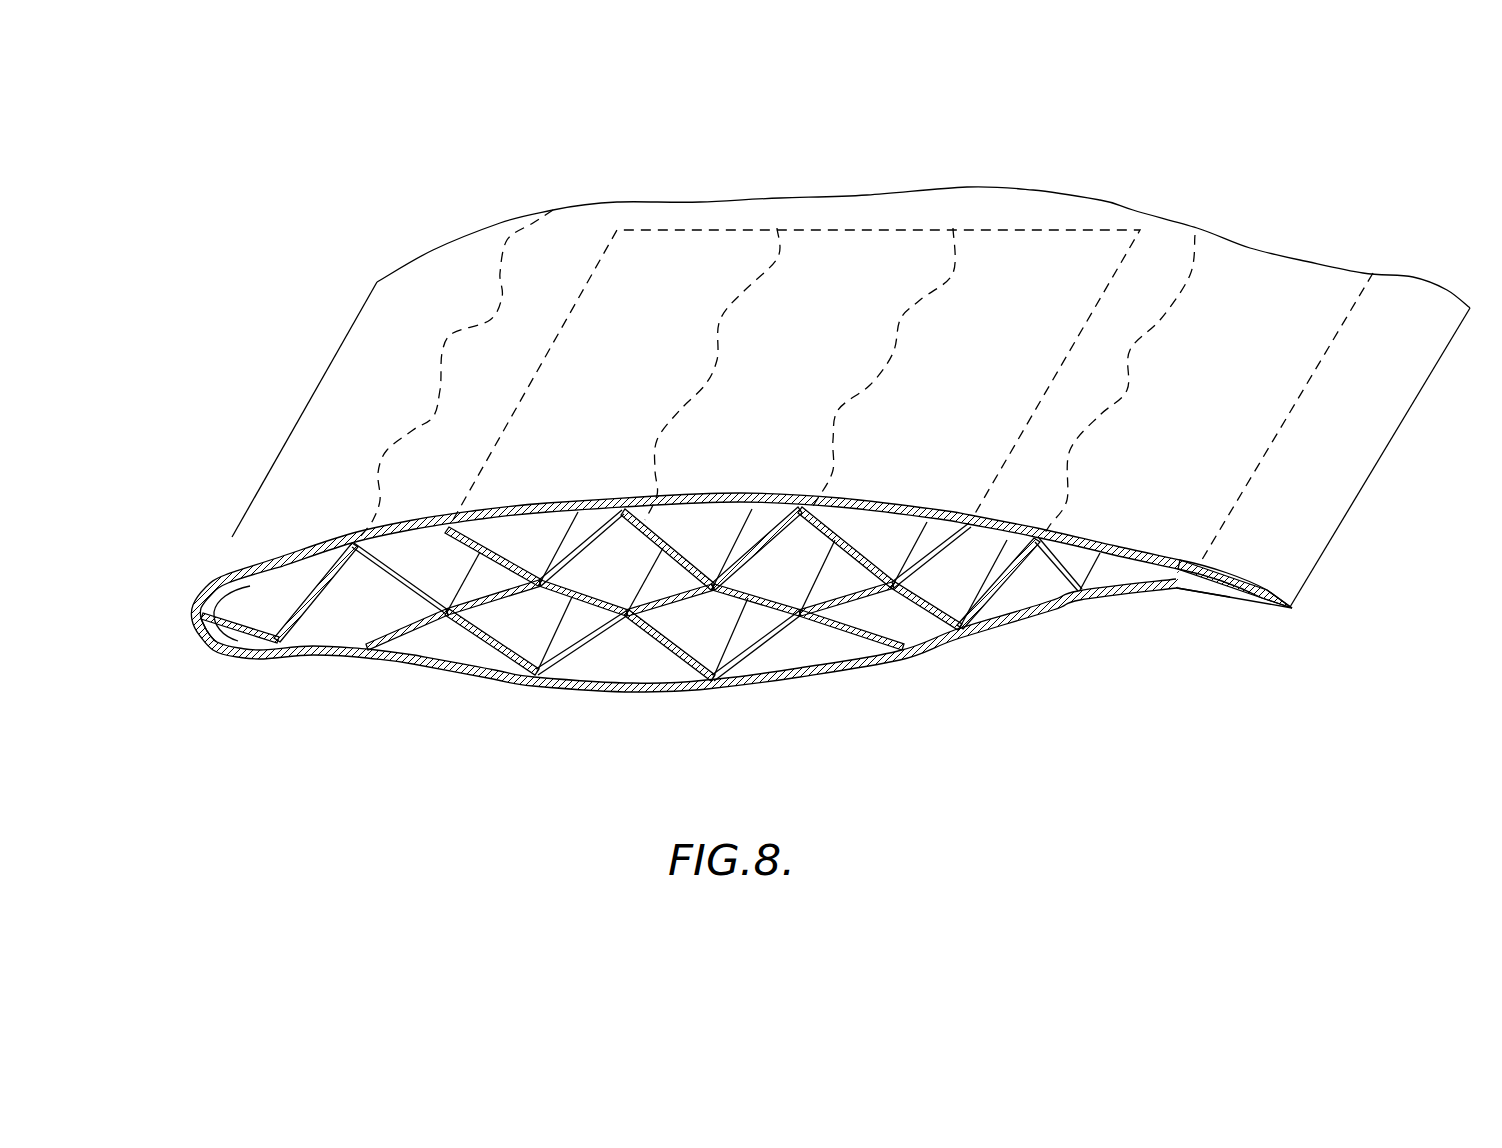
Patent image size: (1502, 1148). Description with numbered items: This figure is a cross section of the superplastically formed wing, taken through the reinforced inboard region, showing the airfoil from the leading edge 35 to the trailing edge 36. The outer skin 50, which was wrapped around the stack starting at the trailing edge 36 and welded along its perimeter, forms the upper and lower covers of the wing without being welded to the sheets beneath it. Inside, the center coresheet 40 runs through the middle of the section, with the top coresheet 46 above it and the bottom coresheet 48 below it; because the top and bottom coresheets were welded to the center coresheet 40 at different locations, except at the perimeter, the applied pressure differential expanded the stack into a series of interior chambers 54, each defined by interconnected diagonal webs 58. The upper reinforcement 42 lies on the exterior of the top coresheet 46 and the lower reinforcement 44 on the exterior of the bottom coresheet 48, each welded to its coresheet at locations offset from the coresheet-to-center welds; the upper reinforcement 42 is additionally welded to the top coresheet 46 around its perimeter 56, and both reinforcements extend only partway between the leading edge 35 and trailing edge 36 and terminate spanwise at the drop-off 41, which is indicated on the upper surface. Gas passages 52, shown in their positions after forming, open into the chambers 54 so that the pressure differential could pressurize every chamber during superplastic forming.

The leading edge 35 is at (318, 385).
The trailing edge 36 is at (1383, 457).
The center coresheet 40 is at (410, 528).
The drop-off 41 is at (700, 228).
The upper reinforcement 42 is at (850, 512).
The lower reinforcement 44 is at (493, 679).
The top coresheet 46 is at (246, 548).
The bottom coresheet 48 is at (233, 650).
The skin 50 is at (230, 573).
The gas passages 52 is at (760, 547).
The chamber 54 is at (757, 630).
The perimeter 56 is at (563, 333).
The diagonal webs 58 is at (557, 592).